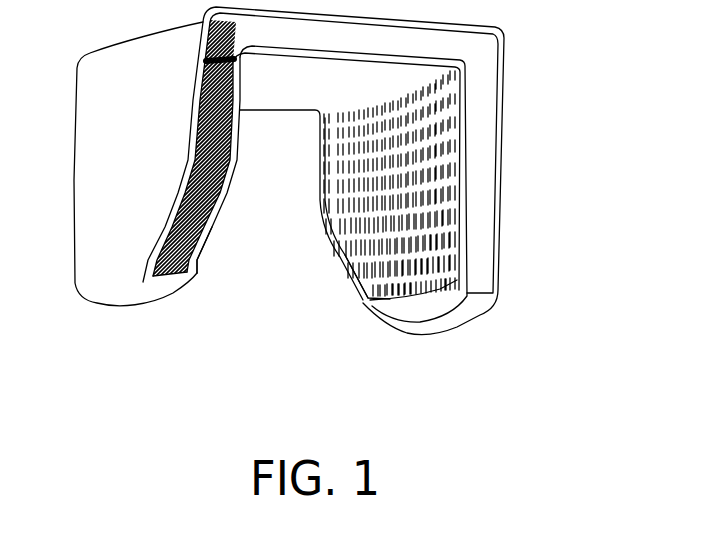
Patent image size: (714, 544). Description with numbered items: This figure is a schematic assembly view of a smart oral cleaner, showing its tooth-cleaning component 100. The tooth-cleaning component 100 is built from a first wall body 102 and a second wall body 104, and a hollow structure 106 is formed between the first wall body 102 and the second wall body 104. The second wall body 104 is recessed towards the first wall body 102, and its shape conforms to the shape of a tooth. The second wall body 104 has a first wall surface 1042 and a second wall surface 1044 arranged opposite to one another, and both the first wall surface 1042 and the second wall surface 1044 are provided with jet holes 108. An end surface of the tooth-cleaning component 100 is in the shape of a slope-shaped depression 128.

The tooth-cleaning component 100 is at (290, 182).
The first wall body 102 is at (500, 258).
The second wall body 104 is at (210, 238).
The hollow structure 106 is at (473, 219).
The jet holes 108 is at (318, 195).
The slope-shaped depression 128 is at (270, 210).
The first wall surface 1042 is at (195, 268).
The second wall surface 1044 is at (366, 302).